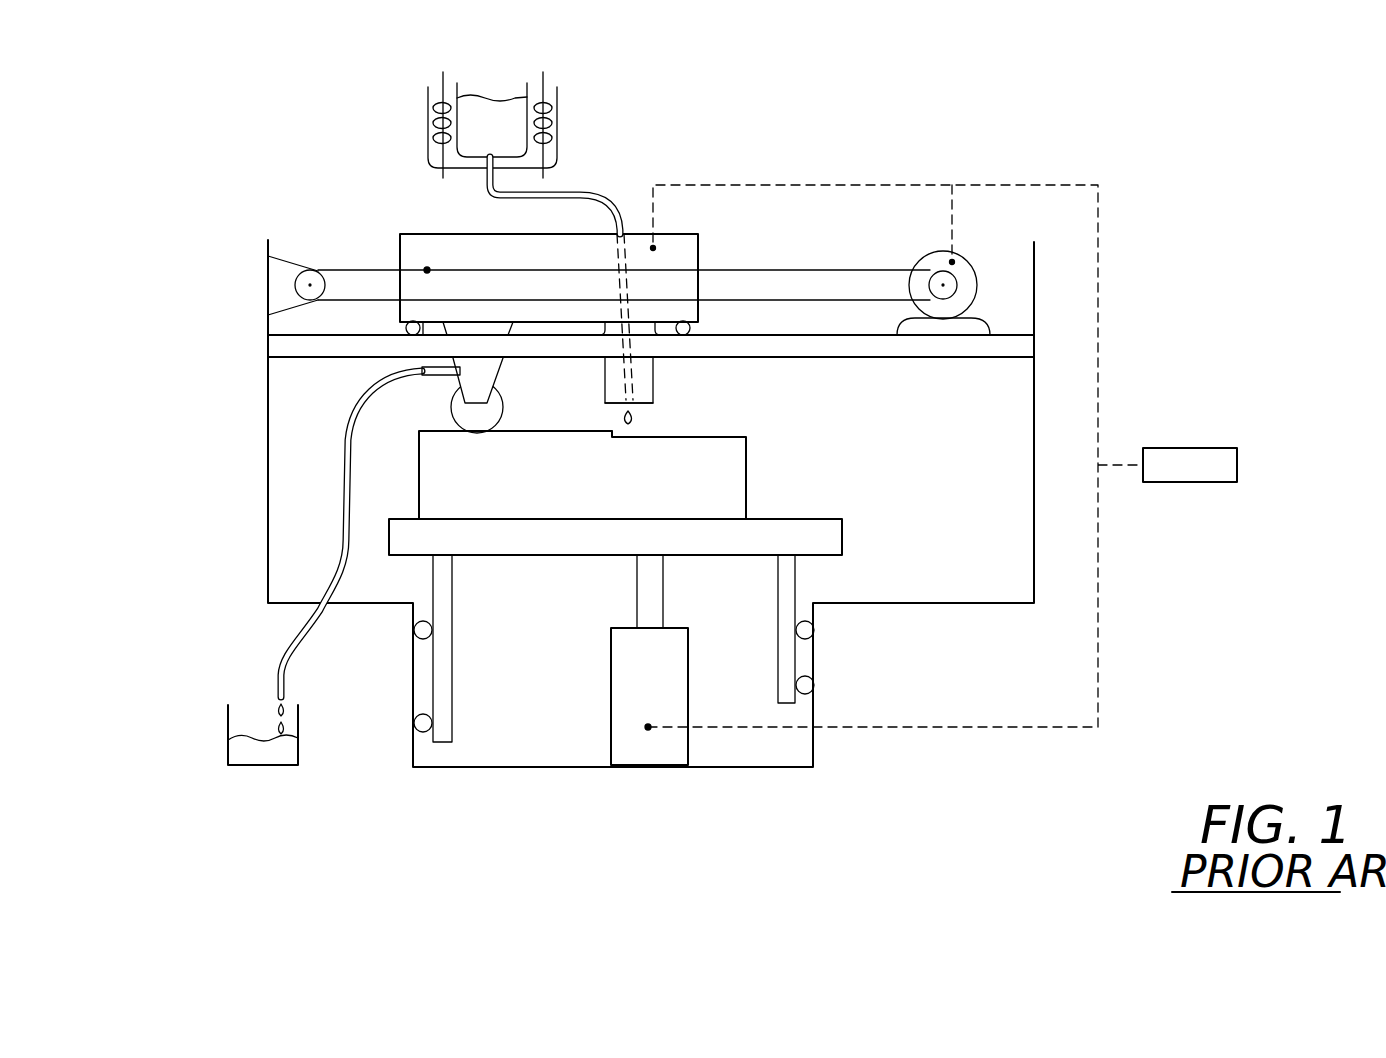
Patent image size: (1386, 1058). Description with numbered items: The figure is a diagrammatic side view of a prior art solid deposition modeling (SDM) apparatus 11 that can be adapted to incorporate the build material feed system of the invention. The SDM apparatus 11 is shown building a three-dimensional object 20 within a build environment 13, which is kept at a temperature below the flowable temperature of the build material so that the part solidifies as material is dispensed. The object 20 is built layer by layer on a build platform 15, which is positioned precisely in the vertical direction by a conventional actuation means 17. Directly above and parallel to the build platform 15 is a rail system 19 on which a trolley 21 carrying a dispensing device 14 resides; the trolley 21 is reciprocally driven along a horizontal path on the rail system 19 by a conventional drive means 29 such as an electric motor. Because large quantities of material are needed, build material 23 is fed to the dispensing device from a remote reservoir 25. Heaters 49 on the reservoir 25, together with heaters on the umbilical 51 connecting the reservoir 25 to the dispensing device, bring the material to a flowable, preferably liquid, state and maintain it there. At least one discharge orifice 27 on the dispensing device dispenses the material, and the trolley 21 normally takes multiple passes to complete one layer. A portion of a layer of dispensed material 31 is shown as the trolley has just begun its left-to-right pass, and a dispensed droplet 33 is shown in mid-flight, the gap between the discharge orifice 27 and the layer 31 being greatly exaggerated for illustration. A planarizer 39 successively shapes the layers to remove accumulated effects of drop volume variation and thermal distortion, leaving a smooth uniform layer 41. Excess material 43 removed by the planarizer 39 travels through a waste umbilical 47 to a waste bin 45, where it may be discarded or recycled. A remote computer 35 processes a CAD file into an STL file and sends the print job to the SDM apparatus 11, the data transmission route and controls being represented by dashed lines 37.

The SDM apparatus 11 is at (284, 176).
The build environment 13 is at (818, 450).
The dispensing device 14 is at (613, 372).
The build platform 15 is at (843, 537).
The actuation means 17 is at (628, 748).
The rail system 19 is at (1012, 345).
The three-dimensional object 20 is at (733, 500).
The trolley 21 is at (453, 233).
The build material 23 is at (497, 110).
The remote reservoir 25 is at (443, 80).
The discharge orifice 27 is at (657, 408).
The drive means 29 is at (938, 252).
The layer of dispensed material 31 is at (563, 430).
The dispensed droplet 33 is at (637, 421).
The remote computer 35 is at (1190, 448).
The data transmission route and controls 37 is at (738, 183).
The planarizer 39 is at (505, 404).
The smooth uniform layer 41 is at (433, 428).
The excess material 43 is at (260, 752).
The waste bin 45 is at (228, 722).
The waste umbilical 47 is at (343, 537).
The heaters 49 is at (430, 118).
The umbilical 51 is at (587, 188).